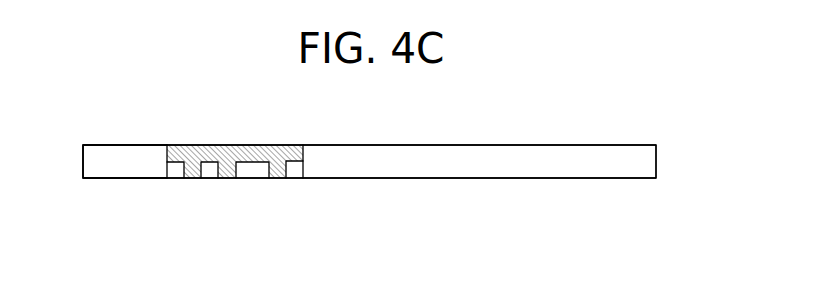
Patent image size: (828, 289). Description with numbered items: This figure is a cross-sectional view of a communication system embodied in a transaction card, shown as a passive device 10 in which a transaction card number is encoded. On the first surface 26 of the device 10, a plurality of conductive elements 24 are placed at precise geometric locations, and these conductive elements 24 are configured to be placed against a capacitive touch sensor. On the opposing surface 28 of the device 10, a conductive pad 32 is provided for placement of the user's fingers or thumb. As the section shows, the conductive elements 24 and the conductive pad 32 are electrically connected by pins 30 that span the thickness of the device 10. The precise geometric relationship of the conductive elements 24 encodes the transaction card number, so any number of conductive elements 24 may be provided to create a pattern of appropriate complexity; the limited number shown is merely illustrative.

The passive device 10 is at (678, 157).
The conductive elements 24 is at (228, 178).
The first surface 26 is at (112, 192).
The opposing surface 28 is at (556, 112).
The pins 30 is at (287, 168).
The conductive pad 32 is at (254, 145).